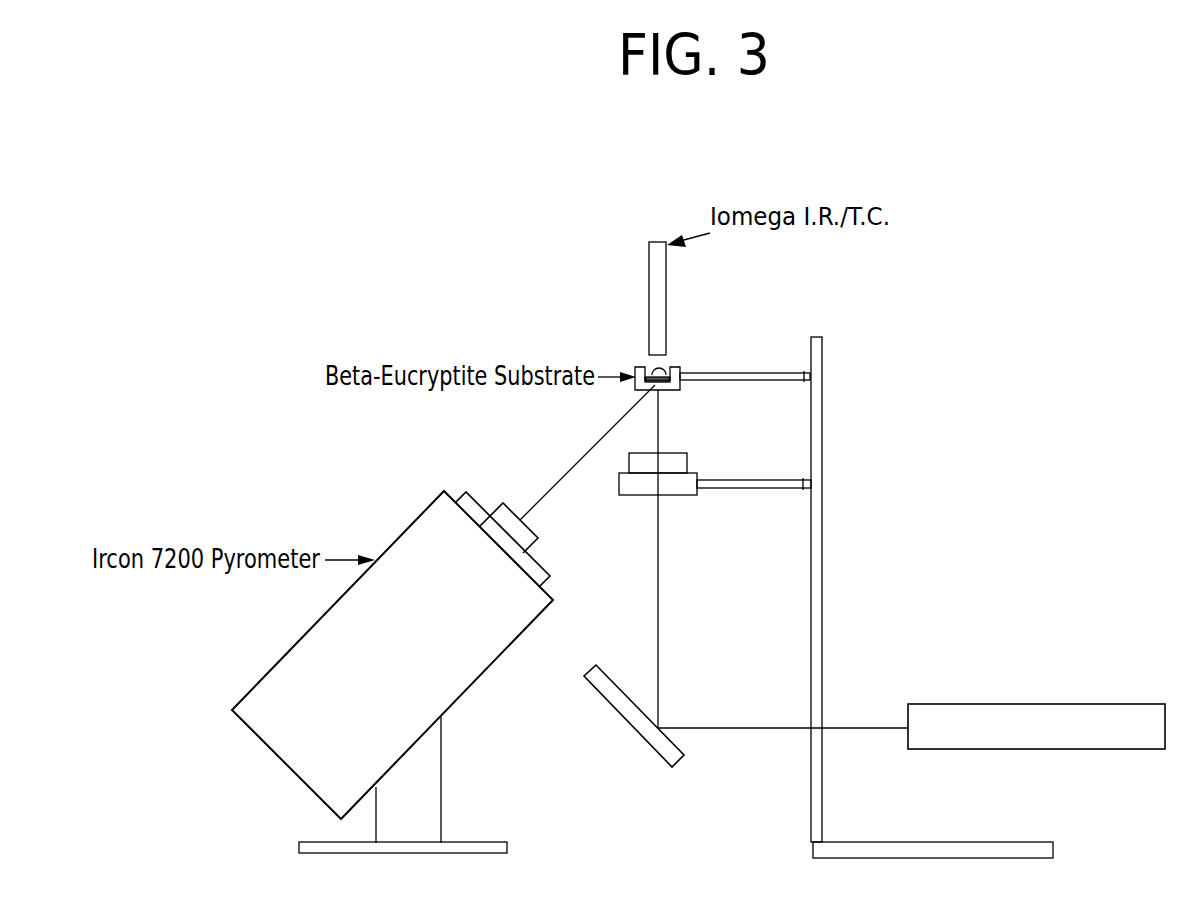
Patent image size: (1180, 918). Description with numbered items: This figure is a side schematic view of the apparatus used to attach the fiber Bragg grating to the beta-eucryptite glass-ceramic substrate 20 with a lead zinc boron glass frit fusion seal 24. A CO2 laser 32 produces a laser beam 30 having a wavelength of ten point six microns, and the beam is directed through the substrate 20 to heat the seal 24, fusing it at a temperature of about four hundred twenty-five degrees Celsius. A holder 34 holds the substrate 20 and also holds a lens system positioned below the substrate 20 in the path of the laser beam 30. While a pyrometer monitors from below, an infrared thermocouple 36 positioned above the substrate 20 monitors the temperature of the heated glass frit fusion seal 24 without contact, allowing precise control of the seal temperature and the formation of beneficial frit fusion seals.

The beta-eucryptite glass-ceramic substrate 20 is at (648, 367).
The lead zinc boron glass frit fusion seal 24 is at (660, 367).
The laser beam 30 is at (678, 587).
The CO2 laser 32 is at (1096, 690).
The holder 34 is at (842, 428).
The infrared thermocouple 36 is at (658, 367).